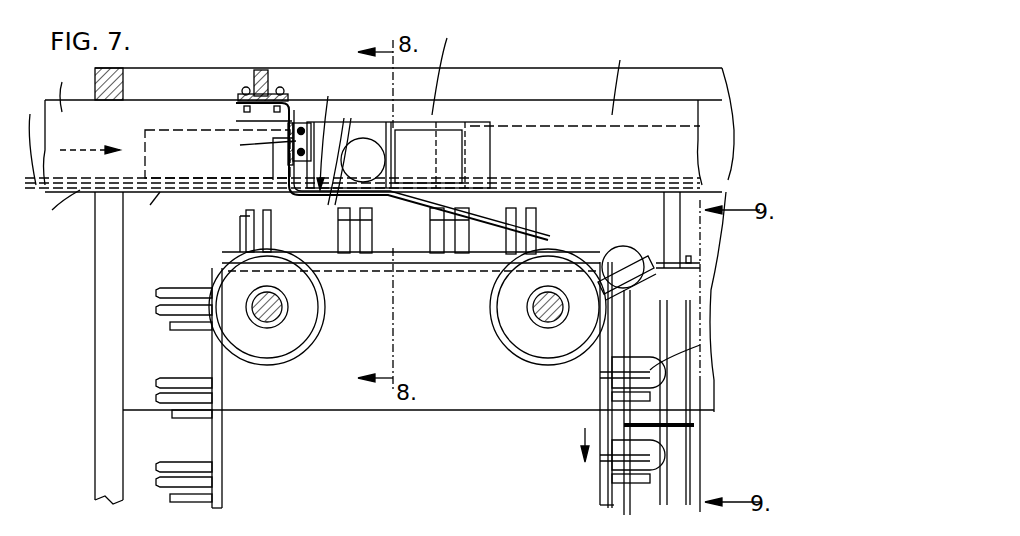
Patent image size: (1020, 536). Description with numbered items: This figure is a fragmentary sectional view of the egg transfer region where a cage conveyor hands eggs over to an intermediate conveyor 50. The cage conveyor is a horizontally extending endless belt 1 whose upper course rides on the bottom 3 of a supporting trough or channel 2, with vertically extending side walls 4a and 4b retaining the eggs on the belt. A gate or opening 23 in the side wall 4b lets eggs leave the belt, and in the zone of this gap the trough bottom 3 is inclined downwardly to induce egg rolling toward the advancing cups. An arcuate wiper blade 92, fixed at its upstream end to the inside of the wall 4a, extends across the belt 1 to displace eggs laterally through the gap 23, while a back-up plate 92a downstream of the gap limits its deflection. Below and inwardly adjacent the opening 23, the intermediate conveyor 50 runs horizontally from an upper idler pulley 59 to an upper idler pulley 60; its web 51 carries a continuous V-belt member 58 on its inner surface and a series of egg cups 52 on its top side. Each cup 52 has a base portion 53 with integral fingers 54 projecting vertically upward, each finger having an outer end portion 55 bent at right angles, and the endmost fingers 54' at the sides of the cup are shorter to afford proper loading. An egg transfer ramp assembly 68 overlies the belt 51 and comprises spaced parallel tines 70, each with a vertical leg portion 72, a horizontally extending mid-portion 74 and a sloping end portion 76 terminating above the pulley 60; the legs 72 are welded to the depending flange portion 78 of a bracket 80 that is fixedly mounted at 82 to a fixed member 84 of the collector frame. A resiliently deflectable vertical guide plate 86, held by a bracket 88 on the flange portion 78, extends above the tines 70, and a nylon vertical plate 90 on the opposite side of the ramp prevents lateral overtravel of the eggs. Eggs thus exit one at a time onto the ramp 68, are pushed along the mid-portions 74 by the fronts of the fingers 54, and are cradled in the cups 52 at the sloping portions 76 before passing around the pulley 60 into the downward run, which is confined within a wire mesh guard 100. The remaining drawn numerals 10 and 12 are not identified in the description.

The endless belt 1 is at (24, 139).
The supporting trough or channel 2 is at (48, 227).
The trough bottom 3 is at (144, 208).
The side wall 4a is at (462, 38).
The side wall 4b is at (76, 83).
The support post 10 is at (100, 308).
The track rail 12 is at (123, 84).
The gate or opening 23 is at (466, 100).
The intermediate conveyor 50 is at (208, 433).
The web 51 is at (598, 410).
The egg cup 52 is at (214, 288).
The base portion 53 is at (202, 326).
The finger 54 is at (408, 315).
The endmost finger 54' is at (430, 364).
The outer end portion 55 is at (158, 310).
The V-belt member 58 is at (222, 447).
The upper idler pulley 59 is at (302, 324).
The upper idler pulley 60 is at (524, 337).
The egg transfer ramp assembly 68 is at (333, 133).
The tine 70 is at (432, 163).
The vertical leg portion 72 is at (285, 156).
The horizontally extending mid-portion 74 is at (346, 152).
The sloping end portion 76 is at (560, 240).
The depending flange portion 78 is at (241, 121).
The bracket 80 is at (240, 106).
The mounting point 82 is at (292, 123).
The fixed member 84 is at (252, 70).
The vertical guide plate 86 is at (254, 146).
The bracket 88 is at (312, 124).
The vertical plate 90 is at (518, 125).
The arcuate wiper blade 92 is at (390, 128).
The back-up plate 92a is at (445, 138).
The wire mesh guard 100 is at (764, 330).